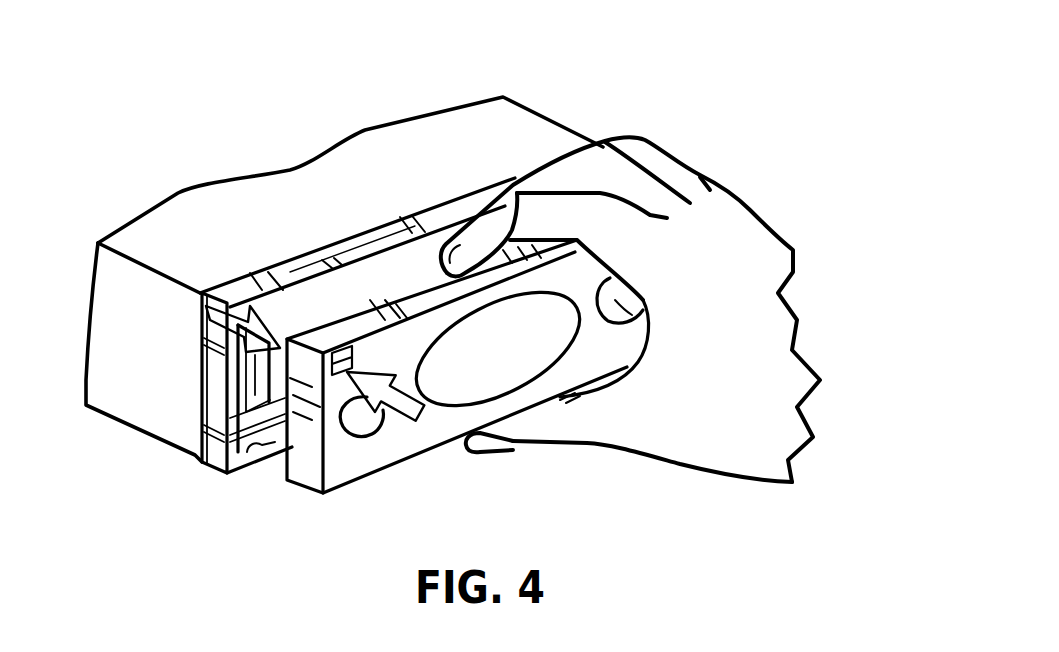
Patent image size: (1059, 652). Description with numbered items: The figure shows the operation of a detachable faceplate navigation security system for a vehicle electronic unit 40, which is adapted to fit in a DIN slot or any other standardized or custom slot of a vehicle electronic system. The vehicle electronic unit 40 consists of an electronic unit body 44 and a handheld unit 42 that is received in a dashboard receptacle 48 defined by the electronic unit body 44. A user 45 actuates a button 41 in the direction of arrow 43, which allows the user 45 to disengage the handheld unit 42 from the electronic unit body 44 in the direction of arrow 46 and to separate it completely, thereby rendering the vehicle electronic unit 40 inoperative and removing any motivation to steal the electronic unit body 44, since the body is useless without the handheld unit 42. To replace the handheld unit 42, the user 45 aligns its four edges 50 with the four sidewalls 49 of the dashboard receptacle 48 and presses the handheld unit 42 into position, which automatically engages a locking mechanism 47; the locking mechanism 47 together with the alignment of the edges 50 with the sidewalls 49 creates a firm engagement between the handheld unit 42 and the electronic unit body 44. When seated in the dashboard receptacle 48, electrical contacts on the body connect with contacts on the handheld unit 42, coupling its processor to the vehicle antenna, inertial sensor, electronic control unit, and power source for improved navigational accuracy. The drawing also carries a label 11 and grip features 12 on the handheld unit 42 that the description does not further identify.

The label window 11 is at (510, 367).
The grip hooks 12 is at (362, 428).
The vehicle electronic unit 40 is at (393, 86).
The button 41 is at (353, 343).
The handheld unit 42 is at (603, 362).
The arrow 43 is at (417, 413).
The electronic unit body 44 is at (463, 189).
The user 45 is at (742, 407).
The arrow 46 is at (206, 313).
The locking mechanism 47 is at (232, 417).
The dashboard receptacle 48 is at (292, 303).
The sidewalls 49 is at (255, 455).
The edges 50 is at (307, 478).